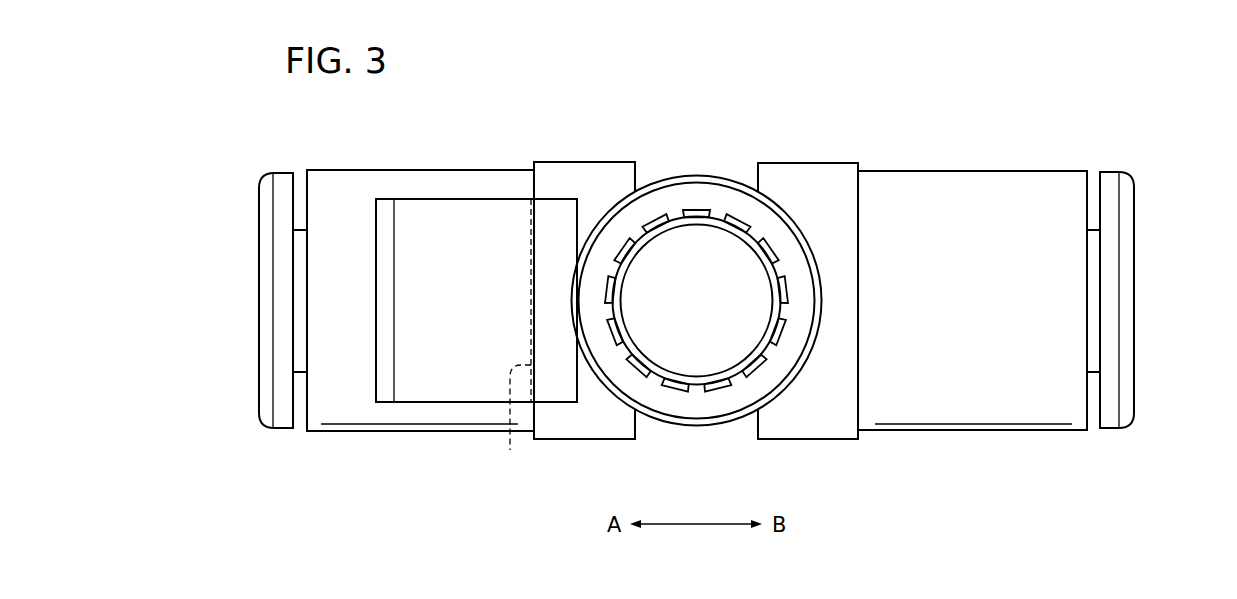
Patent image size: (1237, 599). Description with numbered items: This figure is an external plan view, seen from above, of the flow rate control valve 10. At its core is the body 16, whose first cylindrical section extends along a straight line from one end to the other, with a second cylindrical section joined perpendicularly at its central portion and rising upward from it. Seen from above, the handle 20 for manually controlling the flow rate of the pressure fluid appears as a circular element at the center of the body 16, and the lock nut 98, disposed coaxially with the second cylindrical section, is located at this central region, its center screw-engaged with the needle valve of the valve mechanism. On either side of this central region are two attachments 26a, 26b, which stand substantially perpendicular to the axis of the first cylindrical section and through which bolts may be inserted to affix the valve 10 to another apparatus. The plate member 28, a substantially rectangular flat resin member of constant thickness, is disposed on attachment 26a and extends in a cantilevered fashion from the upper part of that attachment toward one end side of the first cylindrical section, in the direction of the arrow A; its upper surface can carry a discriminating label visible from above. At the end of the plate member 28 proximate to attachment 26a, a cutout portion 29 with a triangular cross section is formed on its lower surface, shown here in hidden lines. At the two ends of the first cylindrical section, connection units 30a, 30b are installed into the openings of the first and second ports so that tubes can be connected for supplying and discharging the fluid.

The flow rate control valve 10 is at (1061, 104).
The body 16 is at (953, 164).
The handle 20 is at (718, 247).
The attachment 26a is at (590, 412).
The attachment 26b is at (803, 412).
The plate member 28 is at (474, 194).
The cutout portion 29 is at (510, 450).
The connection unit 30a is at (245, 254).
The connection unit 30b is at (1146, 239).
The lock nut 98 is at (698, 405).